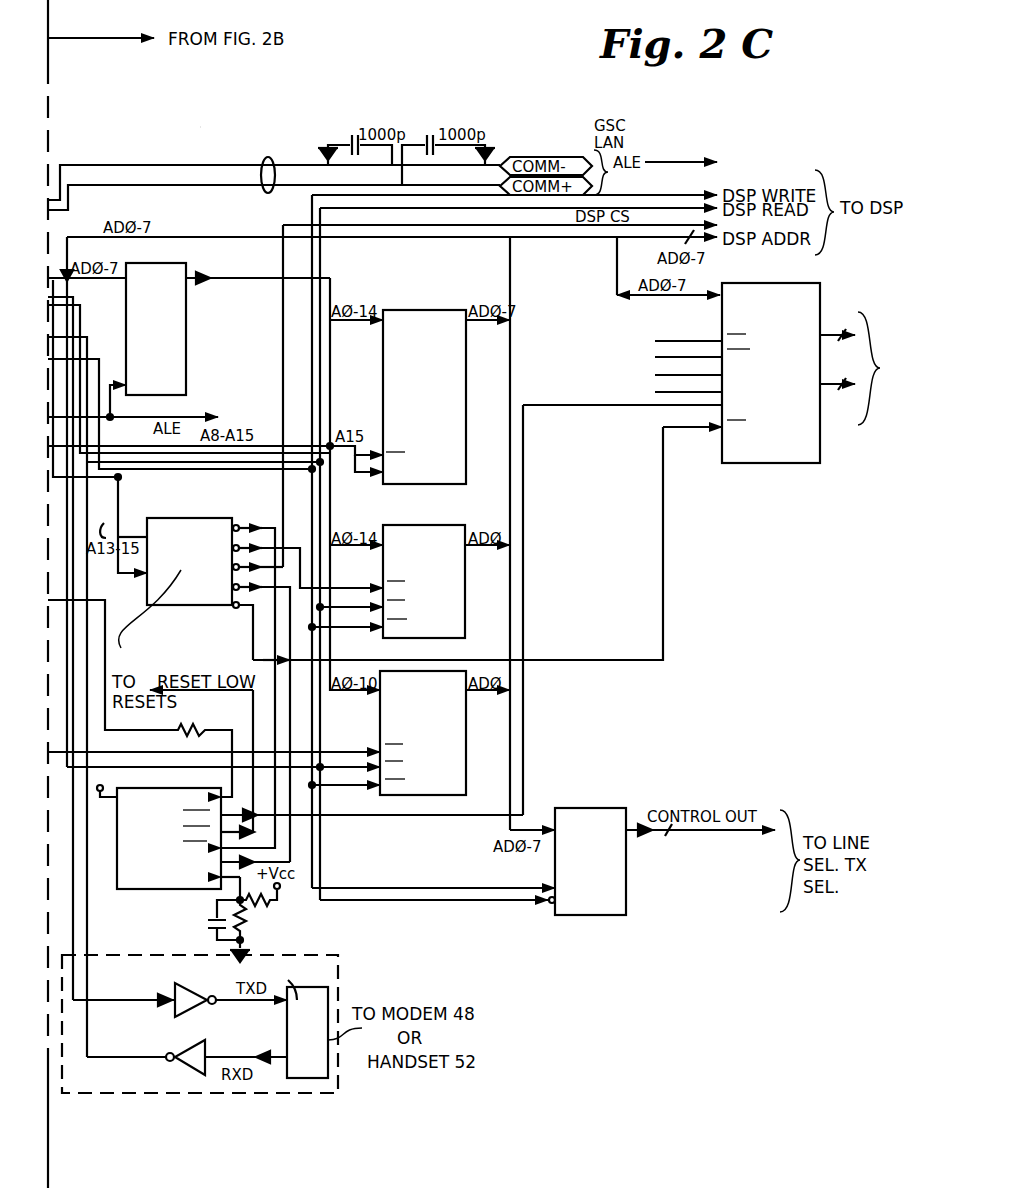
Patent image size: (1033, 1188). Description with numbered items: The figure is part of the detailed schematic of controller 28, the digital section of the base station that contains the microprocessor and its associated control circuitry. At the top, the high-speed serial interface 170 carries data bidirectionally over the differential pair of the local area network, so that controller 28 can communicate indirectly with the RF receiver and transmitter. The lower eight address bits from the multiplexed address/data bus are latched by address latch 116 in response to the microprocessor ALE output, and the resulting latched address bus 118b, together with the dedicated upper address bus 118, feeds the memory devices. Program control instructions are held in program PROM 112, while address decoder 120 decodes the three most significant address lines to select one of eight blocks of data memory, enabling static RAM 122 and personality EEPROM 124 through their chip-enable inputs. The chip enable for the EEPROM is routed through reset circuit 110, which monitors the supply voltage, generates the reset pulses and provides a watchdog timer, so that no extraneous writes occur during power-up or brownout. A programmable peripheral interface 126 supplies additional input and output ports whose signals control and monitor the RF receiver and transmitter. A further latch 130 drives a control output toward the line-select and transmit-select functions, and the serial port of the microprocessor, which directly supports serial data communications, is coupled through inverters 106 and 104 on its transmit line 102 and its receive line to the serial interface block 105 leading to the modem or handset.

The controller 28 is at (203, 125).
The high-speed serial interface 170 is at (272, 158).
The address bus 118b is at (243, 274).
The address latch 116 is at (183, 362).
The program PROM 112 is at (437, 310).
The address bus 118 is at (332, 390).
The address decoder 120 is at (187, 518).
The static RAM 122 is at (465, 606).
The personality EEPROM 124 is at (466, 775).
The programmable peripheral interface 126 is at (728, 463).
The control output latch U7 74HC377 130 is at (588, 808).
The power on/manual reset circuit 110 is at (207, 892).
The TXD line 102 is at (124, 992).
The RXD inverter 104 is at (183, 1048).
The RS232 interface 105 is at (300, 1078).
The TXD inverter 106 is at (185, 985).